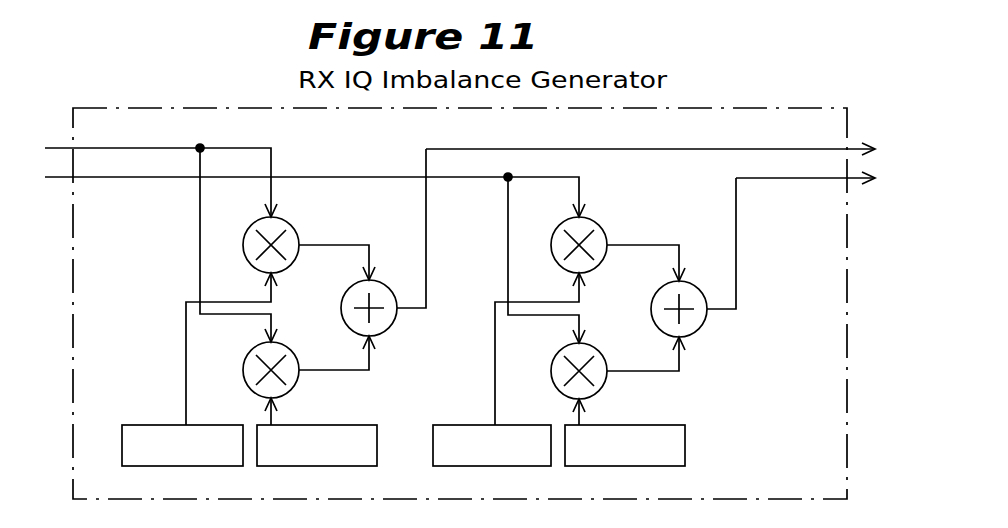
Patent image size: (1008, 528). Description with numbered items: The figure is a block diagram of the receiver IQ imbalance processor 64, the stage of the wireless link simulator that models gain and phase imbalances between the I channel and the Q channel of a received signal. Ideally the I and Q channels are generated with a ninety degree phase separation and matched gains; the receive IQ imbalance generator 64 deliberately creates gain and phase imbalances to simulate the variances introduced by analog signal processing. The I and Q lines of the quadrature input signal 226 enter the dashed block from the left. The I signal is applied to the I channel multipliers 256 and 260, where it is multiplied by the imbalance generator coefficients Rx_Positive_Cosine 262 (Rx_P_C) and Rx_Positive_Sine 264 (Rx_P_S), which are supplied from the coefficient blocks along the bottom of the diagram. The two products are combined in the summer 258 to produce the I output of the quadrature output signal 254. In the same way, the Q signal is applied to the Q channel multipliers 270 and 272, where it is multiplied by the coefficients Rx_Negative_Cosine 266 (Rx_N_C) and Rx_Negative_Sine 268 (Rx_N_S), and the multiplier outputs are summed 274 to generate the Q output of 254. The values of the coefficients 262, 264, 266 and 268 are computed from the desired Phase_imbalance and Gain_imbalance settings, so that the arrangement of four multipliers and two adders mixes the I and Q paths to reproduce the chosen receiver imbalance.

The receiver IQ imbalance processor 64 is at (460, 287).
The quadrature input signal 226 is at (298, 223).
The quadrature output signal 254 is at (672, 149).
The I channel multiplier 256 is at (309, 246).
The summer 258 is at (391, 249).
The I channel multiplier 260 is at (309, 361).
The Rx_Positive_Cosine coefficient 262 is at (199, 382).
The Rx_Positive_Sine coefficient 264 is at (317, 445).
The Rx_Negative_Cosine coefficient 266 is at (509, 382).
The Rx_Negative_Sine coefficient 268 is at (625, 445).
The Q channel multiplier 270 is at (618, 247).
The Q channel multiplier 272 is at (618, 364).
The summer 274 is at (700, 264).